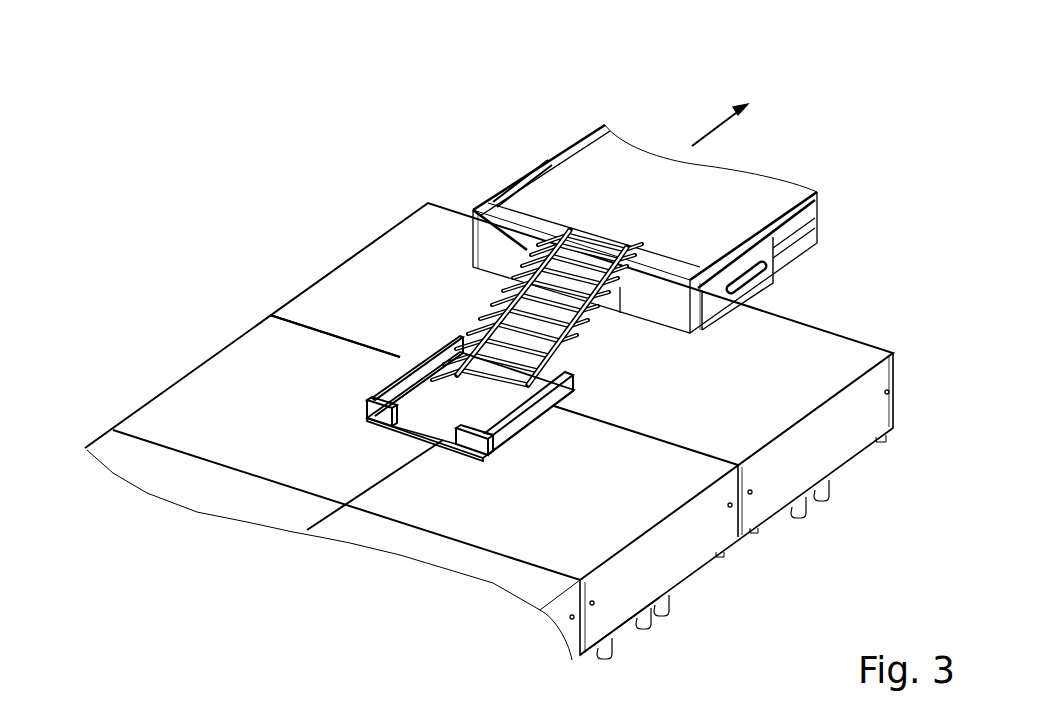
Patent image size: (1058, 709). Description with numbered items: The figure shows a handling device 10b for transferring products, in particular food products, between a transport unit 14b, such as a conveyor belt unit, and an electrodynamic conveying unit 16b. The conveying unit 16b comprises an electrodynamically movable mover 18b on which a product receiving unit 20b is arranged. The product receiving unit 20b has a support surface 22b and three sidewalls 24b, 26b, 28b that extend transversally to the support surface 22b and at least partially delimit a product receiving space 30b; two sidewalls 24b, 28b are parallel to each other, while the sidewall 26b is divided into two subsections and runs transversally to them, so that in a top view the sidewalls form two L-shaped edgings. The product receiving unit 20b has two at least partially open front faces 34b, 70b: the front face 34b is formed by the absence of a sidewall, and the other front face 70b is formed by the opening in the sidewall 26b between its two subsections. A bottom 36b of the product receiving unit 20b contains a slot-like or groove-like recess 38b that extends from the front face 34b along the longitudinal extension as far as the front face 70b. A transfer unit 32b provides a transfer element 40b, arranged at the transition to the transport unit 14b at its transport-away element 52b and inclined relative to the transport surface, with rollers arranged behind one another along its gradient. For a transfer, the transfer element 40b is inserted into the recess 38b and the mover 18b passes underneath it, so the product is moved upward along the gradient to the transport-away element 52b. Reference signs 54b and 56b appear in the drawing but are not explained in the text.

The handling device 10b is at (533, 314).
The transport unit 14b is at (701, 192).
The electrodynamic conveying unit 16b is at (500, 369).
The mover 18b is at (533, 430).
The product receiving unit 20b is at (523, 358).
The support surface 22b is at (428, 366).
The sidewall 24b is at (392, 385).
The sidewall 26b is at (388, 426).
The sidewall 28b is at (563, 388).
The product receiving space 30b is at (447, 355).
The transfer unit 32b is at (798, 286).
The front face 34b is at (580, 358).
The bottom 36b is at (394, 395).
The slot-like or groove-like recess 38b is at (440, 420).
The transfer element 40b is at (556, 232).
The transport-away element 52b is at (623, 178).
The insertion direction 54b is at (712, 127).
The mounting surface 56b is at (383, 283).
The front face 70b is at (393, 449).